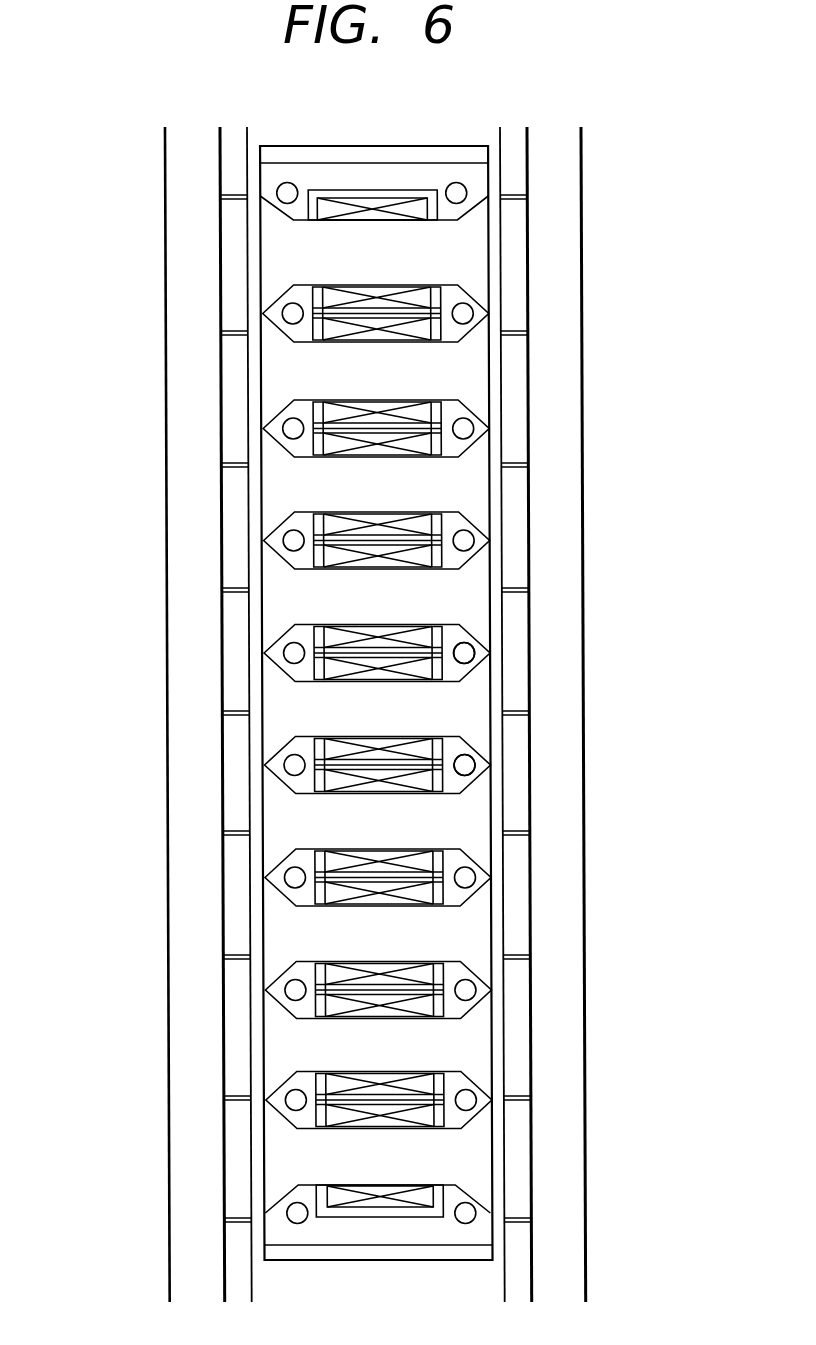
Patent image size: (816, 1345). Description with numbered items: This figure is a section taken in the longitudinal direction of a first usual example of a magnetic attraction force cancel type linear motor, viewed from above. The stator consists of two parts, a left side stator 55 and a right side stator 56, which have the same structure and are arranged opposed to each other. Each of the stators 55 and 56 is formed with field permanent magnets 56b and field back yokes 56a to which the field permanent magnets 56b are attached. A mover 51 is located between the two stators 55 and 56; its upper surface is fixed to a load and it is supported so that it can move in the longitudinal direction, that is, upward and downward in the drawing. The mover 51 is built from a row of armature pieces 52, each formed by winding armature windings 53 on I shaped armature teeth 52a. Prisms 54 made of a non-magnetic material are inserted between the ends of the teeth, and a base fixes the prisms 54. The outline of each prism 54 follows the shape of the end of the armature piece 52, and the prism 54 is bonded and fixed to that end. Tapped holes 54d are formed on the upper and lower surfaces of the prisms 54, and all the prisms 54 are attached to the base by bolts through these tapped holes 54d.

The mover 51 is at (468, 1262).
The armature piece 52 is at (491, 537).
The I shaped armature tooth 52a is at (477, 587).
The armature winding 53 is at (383, 563).
The prism 54 is at (468, 655).
The tapped hole 54d is at (464, 766).
The left side stator 55 is at (182, 448).
The right side stator 56 is at (587, 714).
The field back yoke 56a is at (567, 203).
The field permanent magnet 56b is at (512, 285).